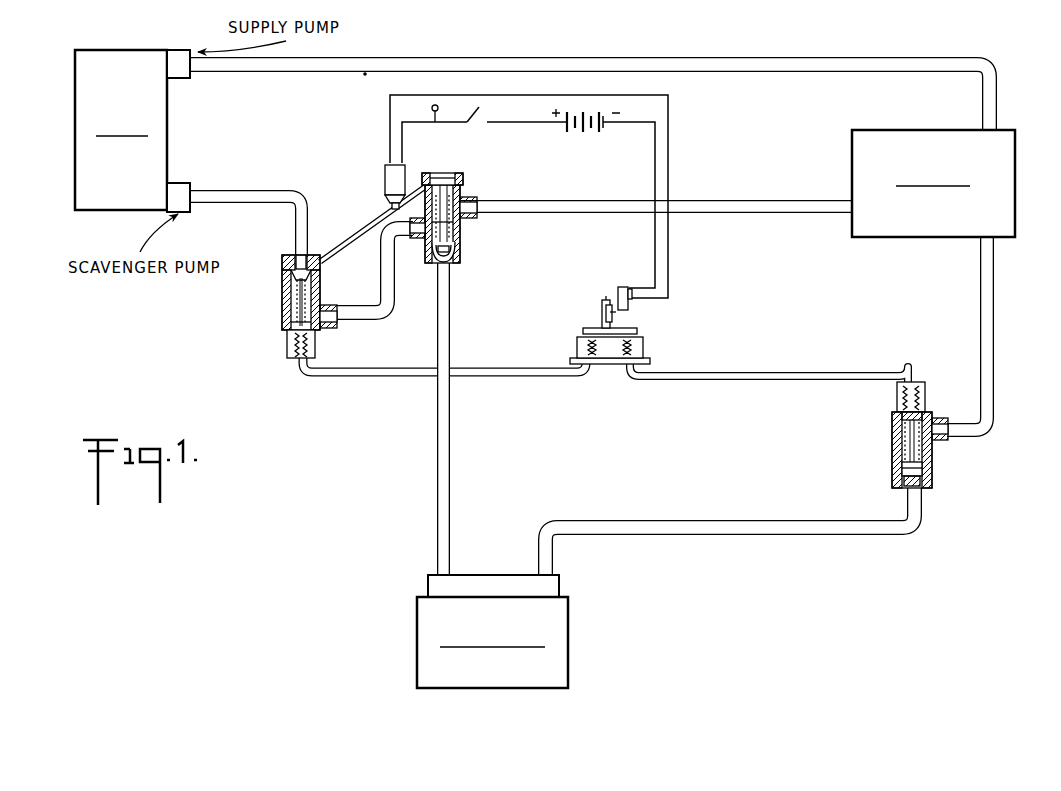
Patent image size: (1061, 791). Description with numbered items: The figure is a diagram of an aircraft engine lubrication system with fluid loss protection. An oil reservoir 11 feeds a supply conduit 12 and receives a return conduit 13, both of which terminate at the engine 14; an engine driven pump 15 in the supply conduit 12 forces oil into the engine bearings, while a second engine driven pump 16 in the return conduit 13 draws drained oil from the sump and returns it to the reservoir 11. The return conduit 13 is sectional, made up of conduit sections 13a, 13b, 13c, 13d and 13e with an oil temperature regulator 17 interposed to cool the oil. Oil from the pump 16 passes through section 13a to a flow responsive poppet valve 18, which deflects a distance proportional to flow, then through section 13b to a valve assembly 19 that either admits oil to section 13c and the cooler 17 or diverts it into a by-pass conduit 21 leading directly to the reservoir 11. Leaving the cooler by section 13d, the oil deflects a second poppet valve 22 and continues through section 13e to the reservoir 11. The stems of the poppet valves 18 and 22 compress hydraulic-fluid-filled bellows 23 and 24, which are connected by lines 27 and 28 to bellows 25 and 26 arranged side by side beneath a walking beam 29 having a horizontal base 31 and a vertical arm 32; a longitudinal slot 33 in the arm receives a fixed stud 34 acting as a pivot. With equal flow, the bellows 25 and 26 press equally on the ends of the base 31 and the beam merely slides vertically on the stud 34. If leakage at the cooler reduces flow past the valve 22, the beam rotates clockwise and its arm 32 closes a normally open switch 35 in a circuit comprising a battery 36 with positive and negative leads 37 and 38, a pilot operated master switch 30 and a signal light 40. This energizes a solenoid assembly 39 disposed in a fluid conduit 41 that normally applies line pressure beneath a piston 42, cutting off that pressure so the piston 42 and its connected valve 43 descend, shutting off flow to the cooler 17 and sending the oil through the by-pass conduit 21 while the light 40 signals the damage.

The oil reservoir 11 is at (936, 116).
The supply conduit 12 is at (538, 57).
The return conduit 13 is at (1000, 356).
The conduit section 13a is at (252, 179).
The conduit section 13b is at (392, 283).
The conduit section 13c is at (450, 446).
The conduit section 13d is at (706, 520).
The conduit section 13e is at (978, 265).
The engine 14 is at (83, 104).
The pump 15 is at (179, 50).
The pump 16 is at (176, 184).
The oil temperature regulator 17 is at (430, 614).
The poppet valve 18 is at (321, 300).
The valve assembly 19 is at (463, 216).
The conduit 21 is at (747, 198).
The poppet valve 22 is at (926, 470).
The bellows 23 is at (316, 351).
The bellows 24 is at (921, 395).
The bellows 25 is at (583, 348).
The bellows 26 is at (639, 348).
The line 27 is at (403, 379).
The line 28 is at (763, 371).
The walking beam 29 is at (599, 320).
The master switch 30 is at (488, 113).
The horizontal base 31 is at (640, 334).
The vertical arm 32 is at (606, 300).
The longitudinal slot 33 is at (617, 314).
The fixed stud 34 is at (605, 309).
The switch 35 is at (623, 287).
The battery 36 is at (586, 134).
The positive lead 37 is at (523, 125).
The negative lead 38 is at (641, 125).
The solenoid assembly 39 is at (385, 178).
The signal light 40 is at (431, 108).
The fluid conduit 41 is at (364, 223).
The piston 42 is at (441, 173).
The valve 43 is at (458, 250).